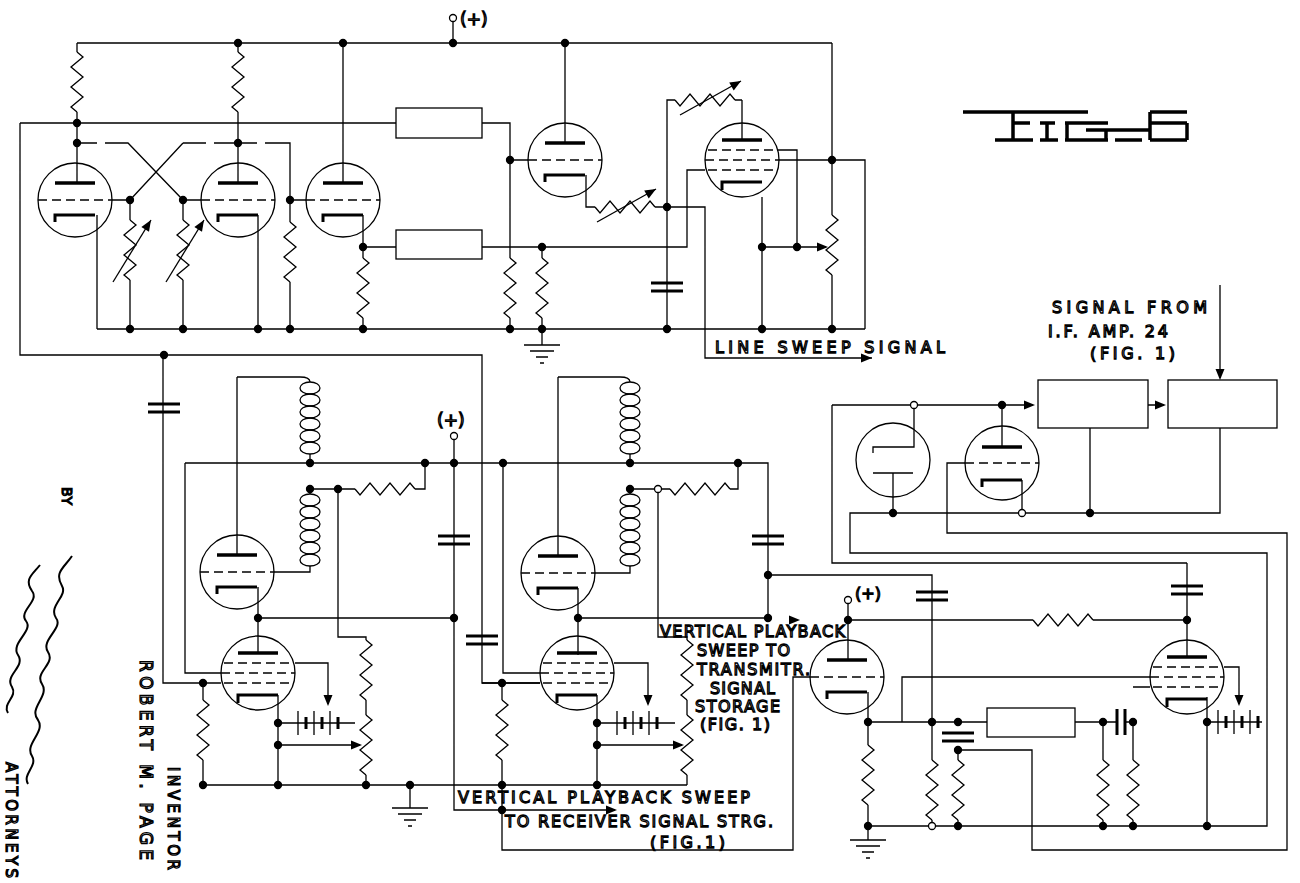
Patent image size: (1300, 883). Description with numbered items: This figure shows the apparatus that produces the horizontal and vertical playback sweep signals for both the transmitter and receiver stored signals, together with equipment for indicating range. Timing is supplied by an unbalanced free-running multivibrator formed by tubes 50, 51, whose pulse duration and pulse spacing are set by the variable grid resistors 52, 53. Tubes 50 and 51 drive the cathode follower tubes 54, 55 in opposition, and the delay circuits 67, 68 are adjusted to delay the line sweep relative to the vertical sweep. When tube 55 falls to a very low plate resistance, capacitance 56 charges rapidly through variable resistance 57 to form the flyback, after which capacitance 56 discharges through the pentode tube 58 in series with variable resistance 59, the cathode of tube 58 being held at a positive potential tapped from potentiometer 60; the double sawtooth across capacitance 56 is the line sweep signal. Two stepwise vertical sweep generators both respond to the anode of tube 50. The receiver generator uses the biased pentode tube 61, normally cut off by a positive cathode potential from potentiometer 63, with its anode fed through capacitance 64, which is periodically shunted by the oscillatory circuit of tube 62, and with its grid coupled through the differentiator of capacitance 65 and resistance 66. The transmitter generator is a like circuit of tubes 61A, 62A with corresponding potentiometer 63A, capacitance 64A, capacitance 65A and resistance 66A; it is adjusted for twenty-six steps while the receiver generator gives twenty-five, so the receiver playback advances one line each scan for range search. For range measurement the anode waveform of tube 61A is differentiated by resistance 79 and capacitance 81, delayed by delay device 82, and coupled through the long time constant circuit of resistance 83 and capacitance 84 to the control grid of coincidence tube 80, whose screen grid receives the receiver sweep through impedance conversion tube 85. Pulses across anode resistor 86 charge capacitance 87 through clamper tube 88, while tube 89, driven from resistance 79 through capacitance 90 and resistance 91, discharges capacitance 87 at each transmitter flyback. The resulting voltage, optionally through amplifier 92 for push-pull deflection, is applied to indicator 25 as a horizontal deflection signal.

The indicator 25 is at (1245, 380).
The electron tube 50 is at (106, 181).
The electron tube 51 is at (201, 181).
The variable resistor 52 is at (138, 267).
The variable resistor 53 is at (193, 267).
The cathode follower tube 54 is at (372, 180).
The cathode follower tube 55 is at (588, 136).
The capacitance 56 is at (650, 290).
The variable resistance 57 is at (630, 200).
The pentode tube 58 is at (764, 136).
The variable resistance 59 is at (703, 96).
The potentiometer 60 is at (827, 233).
The biased pentode tube 61 is at (285, 658).
The pentode tube 61A is at (607, 658).
The oscillator tube 62 is at (209, 541).
The oscillator tube 62A is at (577, 549).
The potentiometer 63 is at (372, 750).
The potentiometer 63A is at (695, 750).
The capacitance 64 is at (432, 541).
The capacitor 64A is at (783, 545).
The capacitance 65 is at (177, 407).
The capacitor 65A is at (463, 641).
The resistance 66 is at (210, 751).
The resistor 66A is at (510, 751).
The delay circuit 67 is at (421, 108).
The delay circuit 68 is at (421, 229).
The resistance 79 is at (923, 798).
The coincidence tube 80 is at (1208, 652).
The capacitance 81 is at (948, 600).
The delay device 82 is at (1012, 706).
The resistance 83 is at (1144, 791).
The capacitance 84 is at (1117, 708).
The impedance conversion tube 85 is at (874, 656).
The anode resistor 86 is at (1050, 610).
The capacitance 87 is at (1203, 587).
The clamper tube 88 is at (859, 445).
The discharge tube 89 is at (970, 445).
The capacitance 90 is at (934, 742).
The resistance 91 is at (970, 796).
The amplifier 92 is at (1066, 378).